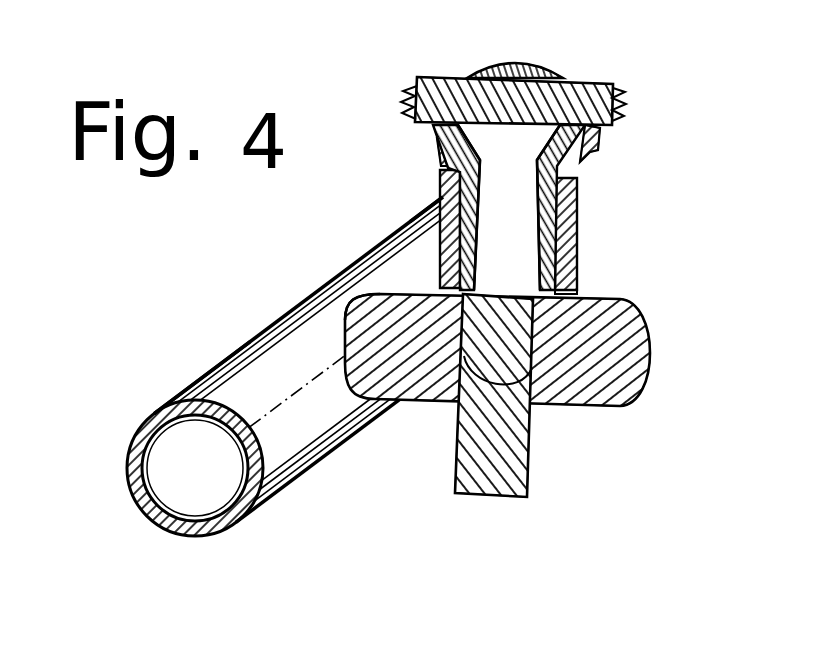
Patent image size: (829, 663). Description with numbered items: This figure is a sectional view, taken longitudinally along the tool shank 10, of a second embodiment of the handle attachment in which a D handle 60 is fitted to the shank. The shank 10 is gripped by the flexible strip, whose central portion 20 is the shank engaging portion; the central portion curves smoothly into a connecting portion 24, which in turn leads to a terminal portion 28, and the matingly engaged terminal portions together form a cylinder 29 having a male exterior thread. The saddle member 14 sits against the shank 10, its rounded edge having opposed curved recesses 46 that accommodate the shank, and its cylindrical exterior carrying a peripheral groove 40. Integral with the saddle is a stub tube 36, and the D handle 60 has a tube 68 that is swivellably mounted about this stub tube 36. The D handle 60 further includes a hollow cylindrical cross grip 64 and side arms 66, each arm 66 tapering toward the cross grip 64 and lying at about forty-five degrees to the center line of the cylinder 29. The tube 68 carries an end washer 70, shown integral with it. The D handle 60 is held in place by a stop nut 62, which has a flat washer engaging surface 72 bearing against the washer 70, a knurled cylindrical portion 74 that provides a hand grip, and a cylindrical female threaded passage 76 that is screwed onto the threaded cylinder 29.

The tool shank 10 is at (588, 92).
The saddle member 14 is at (563, 164).
The central portion 20 is at (520, 66).
The connecting portion 24 is at (497, 213).
The terminal portion 28 is at (530, 378).
The cylinder 29 is at (473, 496).
The stub tube 36 is at (575, 257).
The peripheral groove 40 is at (440, 131).
The curved recess 46 is at (412, 86).
The D handle 60 is at (313, 483).
The stop nut 62 is at (433, 427).
The cross grip 64 is at (197, 529).
The side arm 66 is at (207, 368).
The tube 68 is at (437, 240).
The end washer 70 is at (573, 293).
The washer engaging surface 72 is at (397, 287).
The knurled cylindrical portion 74 is at (345, 340).
The female threaded passage 76 is at (505, 410).